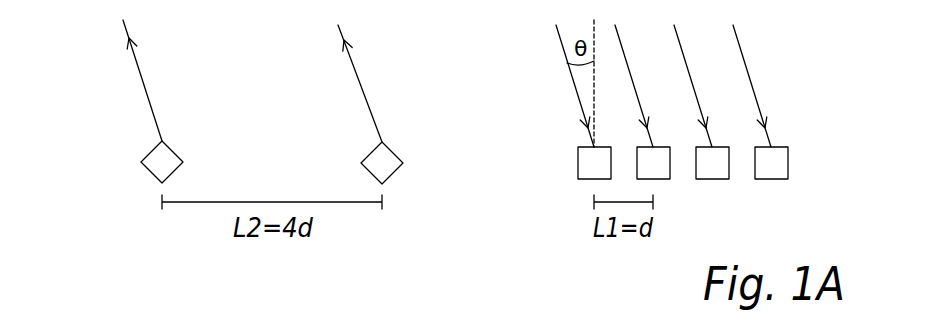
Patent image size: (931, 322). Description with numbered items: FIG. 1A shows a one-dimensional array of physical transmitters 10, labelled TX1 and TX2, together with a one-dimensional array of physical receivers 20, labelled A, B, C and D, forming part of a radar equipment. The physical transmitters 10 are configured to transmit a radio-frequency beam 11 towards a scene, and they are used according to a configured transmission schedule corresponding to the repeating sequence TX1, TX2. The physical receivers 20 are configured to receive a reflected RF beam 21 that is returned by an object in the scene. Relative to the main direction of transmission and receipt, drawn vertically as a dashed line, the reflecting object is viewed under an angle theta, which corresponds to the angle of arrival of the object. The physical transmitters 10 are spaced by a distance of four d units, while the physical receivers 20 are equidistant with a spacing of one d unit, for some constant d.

The physical transmitters 10 is at (150, 152).
The radio-frequency (RF) beam 11 is at (125, 24).
The physical receivers 20 is at (710, 180).
The reflected RF beam 21 is at (567, 62).